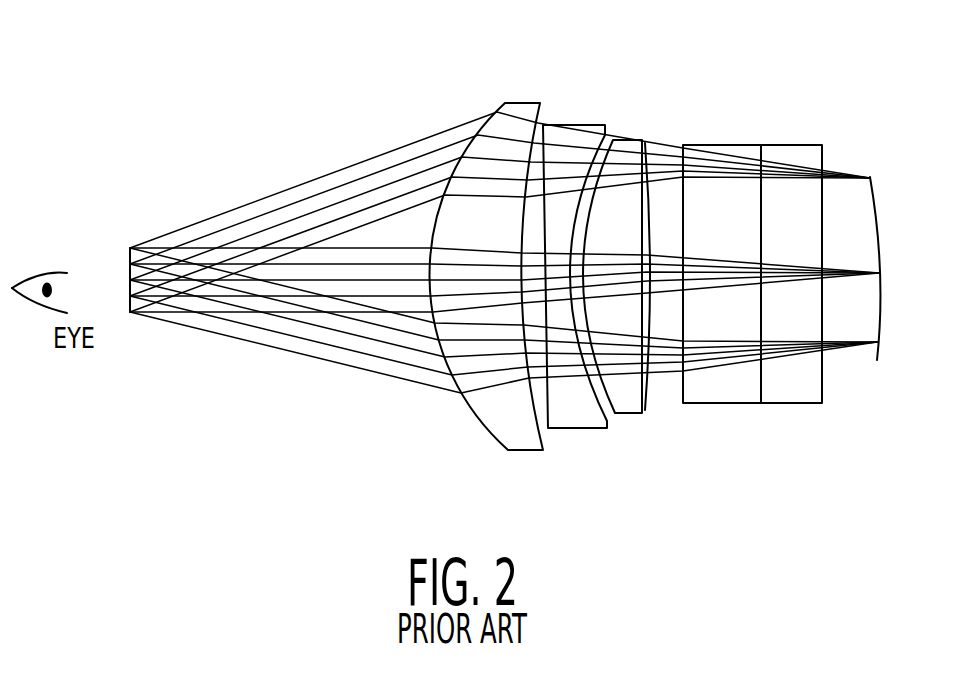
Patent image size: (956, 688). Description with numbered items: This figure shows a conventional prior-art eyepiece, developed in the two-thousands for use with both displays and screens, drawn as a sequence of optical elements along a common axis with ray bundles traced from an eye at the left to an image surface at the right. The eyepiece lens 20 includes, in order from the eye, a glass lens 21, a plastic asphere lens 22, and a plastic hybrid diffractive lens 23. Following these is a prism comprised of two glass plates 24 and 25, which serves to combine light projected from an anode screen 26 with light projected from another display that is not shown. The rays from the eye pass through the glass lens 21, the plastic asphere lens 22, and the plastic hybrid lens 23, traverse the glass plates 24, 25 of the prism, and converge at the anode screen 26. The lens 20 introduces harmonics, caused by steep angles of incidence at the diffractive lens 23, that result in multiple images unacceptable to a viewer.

The lens 20 is at (438, 86).
The glass lens 21 is at (497, 422).
The plastic asphere lens 22 is at (579, 421).
The plastic hybrid (diffractive) lens 23 is at (631, 408).
The glass plate 24 is at (727, 393).
The glass plate 25 is at (797, 395).
The anode screen 26 is at (876, 368).